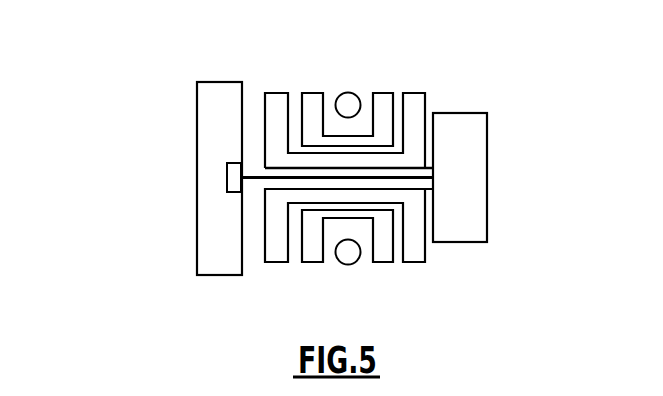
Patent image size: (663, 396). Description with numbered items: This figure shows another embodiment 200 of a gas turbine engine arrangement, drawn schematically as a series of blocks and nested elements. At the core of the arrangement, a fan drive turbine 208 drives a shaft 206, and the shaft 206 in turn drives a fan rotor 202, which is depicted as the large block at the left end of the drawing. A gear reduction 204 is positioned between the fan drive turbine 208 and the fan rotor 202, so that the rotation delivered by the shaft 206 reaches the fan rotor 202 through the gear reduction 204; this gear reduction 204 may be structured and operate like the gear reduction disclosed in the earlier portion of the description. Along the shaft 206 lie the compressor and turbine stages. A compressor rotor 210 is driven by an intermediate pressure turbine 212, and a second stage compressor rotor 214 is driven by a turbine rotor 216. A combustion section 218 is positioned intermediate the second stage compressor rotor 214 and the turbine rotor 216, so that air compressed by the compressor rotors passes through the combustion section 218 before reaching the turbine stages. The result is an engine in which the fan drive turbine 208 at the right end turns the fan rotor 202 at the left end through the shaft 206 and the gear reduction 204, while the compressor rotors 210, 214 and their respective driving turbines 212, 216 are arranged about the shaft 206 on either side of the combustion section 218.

The embodiment 200 is at (149, 53).
The fan rotor 202 is at (197, 127).
The gear reduction 204 is at (228, 192).
The shaft 206 is at (408, 177).
The fan drive turbine 208 is at (473, 157).
The compressor rotor 210 is at (277, 238).
The intermediate pressure turbine 212 is at (412, 264).
The second stage compressor rotor 214 is at (313, 95).
The turbine rotor 216 is at (380, 95).
The combustion section 218 is at (347, 93).